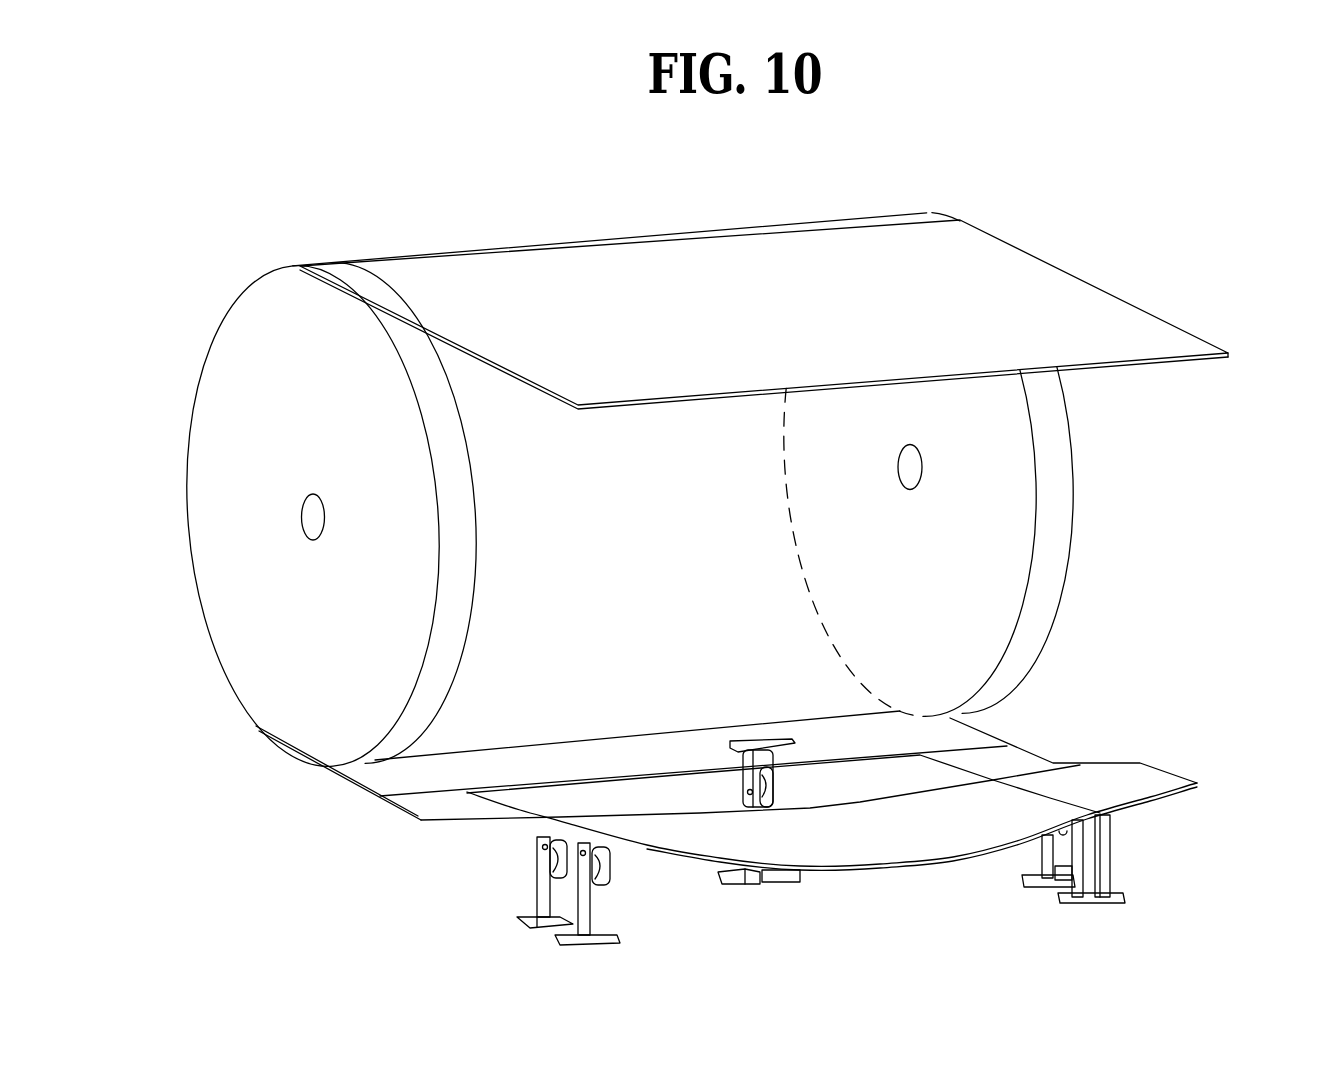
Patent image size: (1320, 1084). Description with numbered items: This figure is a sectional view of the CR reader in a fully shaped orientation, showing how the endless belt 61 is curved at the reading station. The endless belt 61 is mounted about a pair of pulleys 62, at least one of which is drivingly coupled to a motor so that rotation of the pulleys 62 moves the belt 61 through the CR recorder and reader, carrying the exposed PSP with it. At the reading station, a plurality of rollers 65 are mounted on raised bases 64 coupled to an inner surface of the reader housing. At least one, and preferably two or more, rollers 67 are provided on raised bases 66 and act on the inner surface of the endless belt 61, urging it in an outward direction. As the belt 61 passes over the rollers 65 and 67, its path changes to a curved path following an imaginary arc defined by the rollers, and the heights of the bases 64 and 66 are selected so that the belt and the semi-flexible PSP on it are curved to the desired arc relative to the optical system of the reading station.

The endless belt 61 is at (1057, 298).
The pulley 62 is at (964, 542).
The raised base 64 is at (540, 893).
The roller 65 is at (607, 862).
The raised base 66 is at (747, 737).
The roller 67 is at (773, 798).